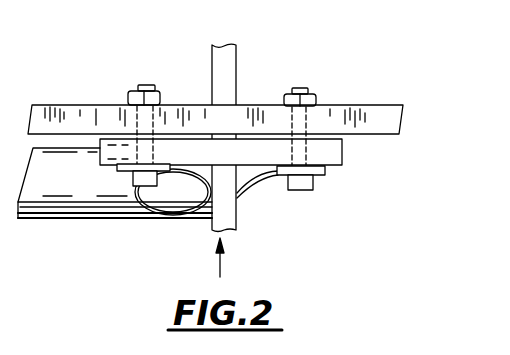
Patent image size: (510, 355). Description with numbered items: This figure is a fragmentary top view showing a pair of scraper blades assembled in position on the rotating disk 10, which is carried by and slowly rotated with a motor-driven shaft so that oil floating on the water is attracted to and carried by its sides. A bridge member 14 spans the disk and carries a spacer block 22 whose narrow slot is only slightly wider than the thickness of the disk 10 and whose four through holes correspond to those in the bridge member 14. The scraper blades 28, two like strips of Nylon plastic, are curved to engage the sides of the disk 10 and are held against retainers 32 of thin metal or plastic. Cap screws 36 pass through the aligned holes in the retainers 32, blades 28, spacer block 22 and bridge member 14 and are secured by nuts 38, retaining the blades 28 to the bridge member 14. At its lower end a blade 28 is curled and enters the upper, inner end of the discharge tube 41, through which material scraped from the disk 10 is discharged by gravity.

The rotating disk 10 is at (235, 52).
The bridge member 14 is at (75, 104).
The spacer block 22 is at (100, 148).
The scraper blades 28 is at (250, 173).
The retainers 32 is at (326, 172).
The cap screws 36 is at (313, 187).
The nuts 38 is at (317, 100).
The discharge tube 41 is at (108, 203).